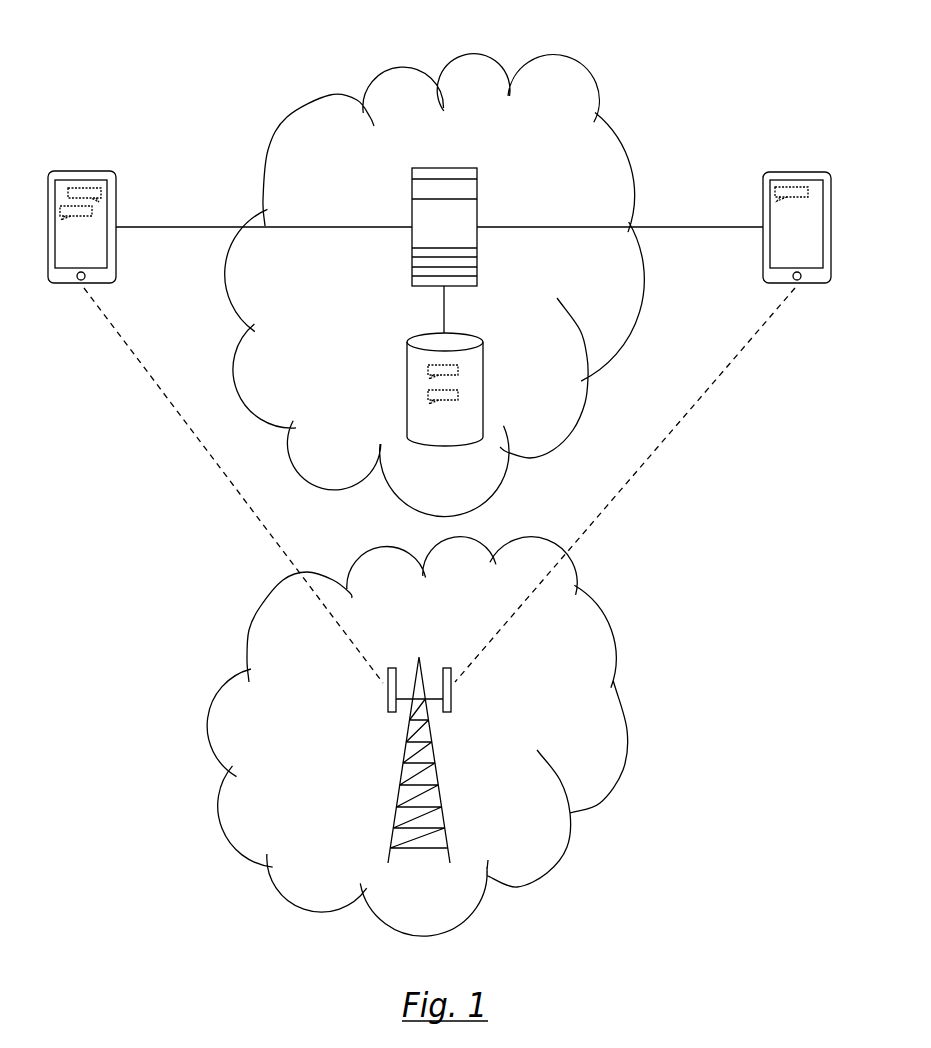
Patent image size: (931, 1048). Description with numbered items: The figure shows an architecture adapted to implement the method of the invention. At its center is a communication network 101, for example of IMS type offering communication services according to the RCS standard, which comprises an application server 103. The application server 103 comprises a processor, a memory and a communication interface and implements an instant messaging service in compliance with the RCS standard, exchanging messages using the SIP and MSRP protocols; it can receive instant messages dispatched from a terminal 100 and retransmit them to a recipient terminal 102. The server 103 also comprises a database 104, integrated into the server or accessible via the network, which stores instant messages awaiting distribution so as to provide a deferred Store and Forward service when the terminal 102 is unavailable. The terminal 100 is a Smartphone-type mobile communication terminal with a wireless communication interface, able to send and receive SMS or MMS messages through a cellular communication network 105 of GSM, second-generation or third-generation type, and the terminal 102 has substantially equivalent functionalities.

The terminal 100 is at (98, 171).
The communication network 101 is at (478, 53).
The terminal 102 is at (819, 172).
The application server 103 is at (466, 168).
The database 104 is at (418, 338).
The cellular communication network 105 is at (226, 671).